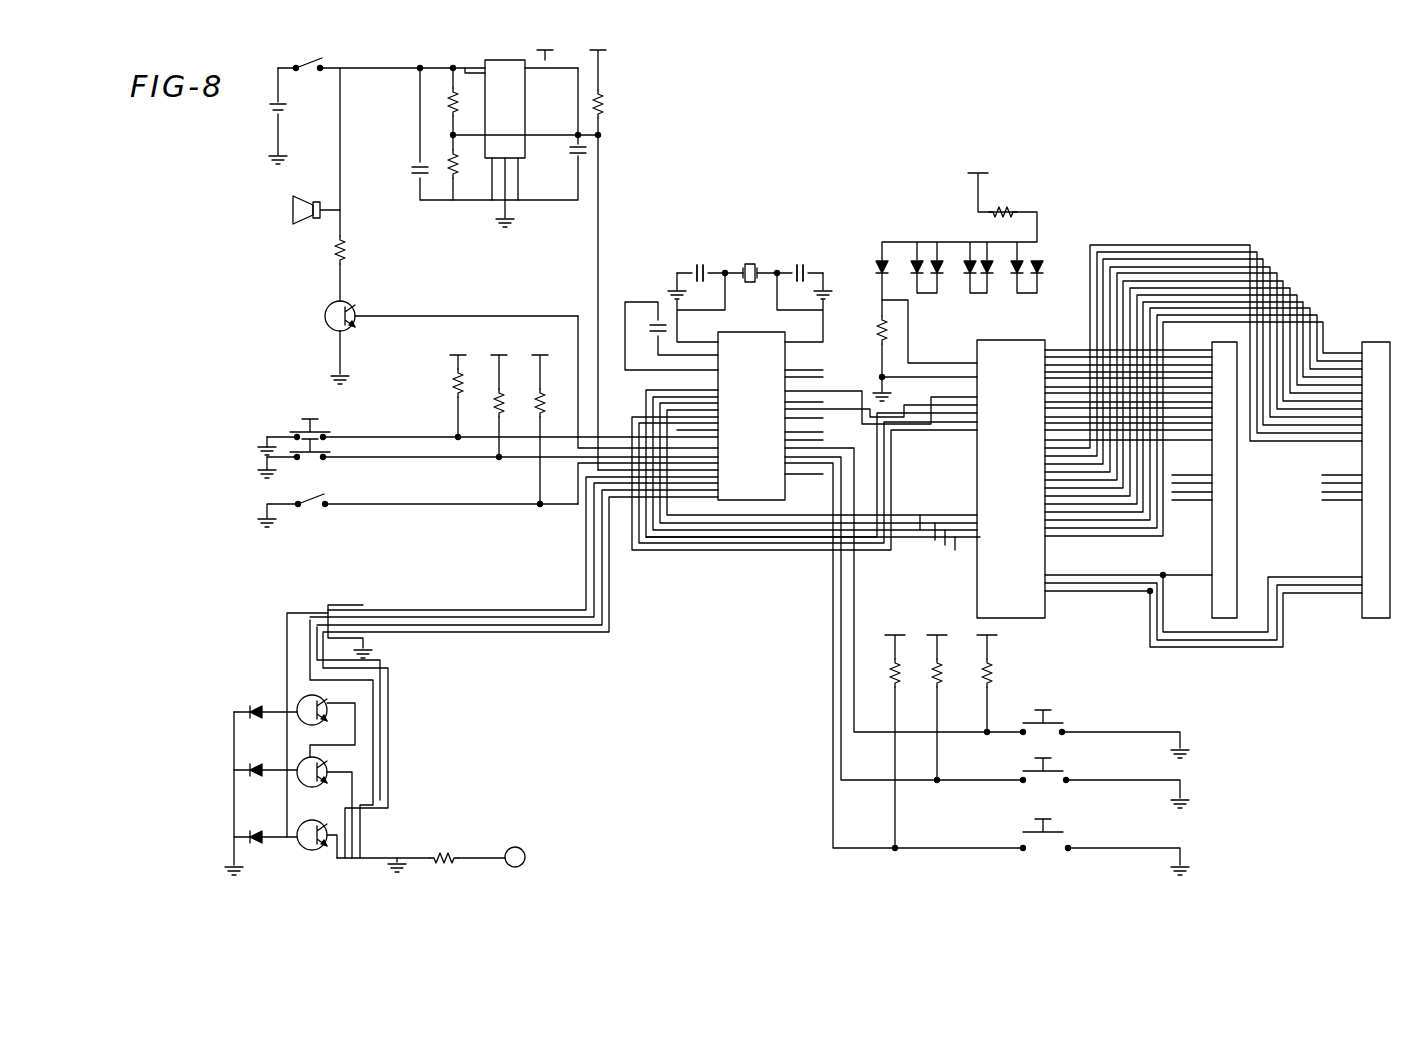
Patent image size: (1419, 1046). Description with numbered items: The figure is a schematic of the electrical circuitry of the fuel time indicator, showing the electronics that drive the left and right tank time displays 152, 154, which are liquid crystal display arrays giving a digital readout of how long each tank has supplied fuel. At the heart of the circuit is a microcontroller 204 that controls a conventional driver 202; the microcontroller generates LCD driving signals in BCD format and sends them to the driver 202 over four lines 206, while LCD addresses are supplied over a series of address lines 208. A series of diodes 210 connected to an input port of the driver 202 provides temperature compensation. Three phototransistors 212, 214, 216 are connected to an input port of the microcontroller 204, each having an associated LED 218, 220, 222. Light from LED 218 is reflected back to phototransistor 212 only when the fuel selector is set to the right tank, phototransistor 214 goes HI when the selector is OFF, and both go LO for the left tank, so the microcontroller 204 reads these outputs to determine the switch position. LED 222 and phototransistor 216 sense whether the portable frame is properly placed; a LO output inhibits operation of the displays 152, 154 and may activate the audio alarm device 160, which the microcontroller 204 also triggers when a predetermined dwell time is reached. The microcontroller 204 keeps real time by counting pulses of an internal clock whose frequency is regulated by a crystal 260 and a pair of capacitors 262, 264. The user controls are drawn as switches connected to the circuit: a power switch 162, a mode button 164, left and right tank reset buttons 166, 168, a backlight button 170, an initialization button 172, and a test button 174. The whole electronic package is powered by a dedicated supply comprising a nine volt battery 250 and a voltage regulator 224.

The left tank time display 152 is at (1240, 532).
The right tank time display 154 is at (1373, 618).
The audio alarm device 160 is at (290, 228).
The power switch 162 is at (325, 62).
The mode button 164 is at (328, 496).
The left tank reset button 166 is at (326, 450).
The right tank reset button 168 is at (300, 427).
The backlight button 170 is at (1068, 722).
The initialization button 172 is at (1068, 762).
The test button 174 is at (1068, 820).
The driver 202 is at (1036, 474).
The microcontroller 204 is at (768, 418).
The four lines 206 is at (958, 562).
The address lines 208 is at (940, 392).
The diodes 210 is at (882, 256).
The phototransistor 212 is at (330, 698).
The phototransistor 214 is at (330, 764).
The phototransistor 216 is at (330, 828).
The LED 218 is at (252, 702).
The LED 220 is at (245, 766).
The LED 222 is at (250, 836).
The voltage regulator 224 is at (515, 112).
The battery 250 is at (267, 118).
The crystal 260 is at (750, 258).
The capacitor 262 is at (700, 265).
The capacitor 264 is at (802, 265).